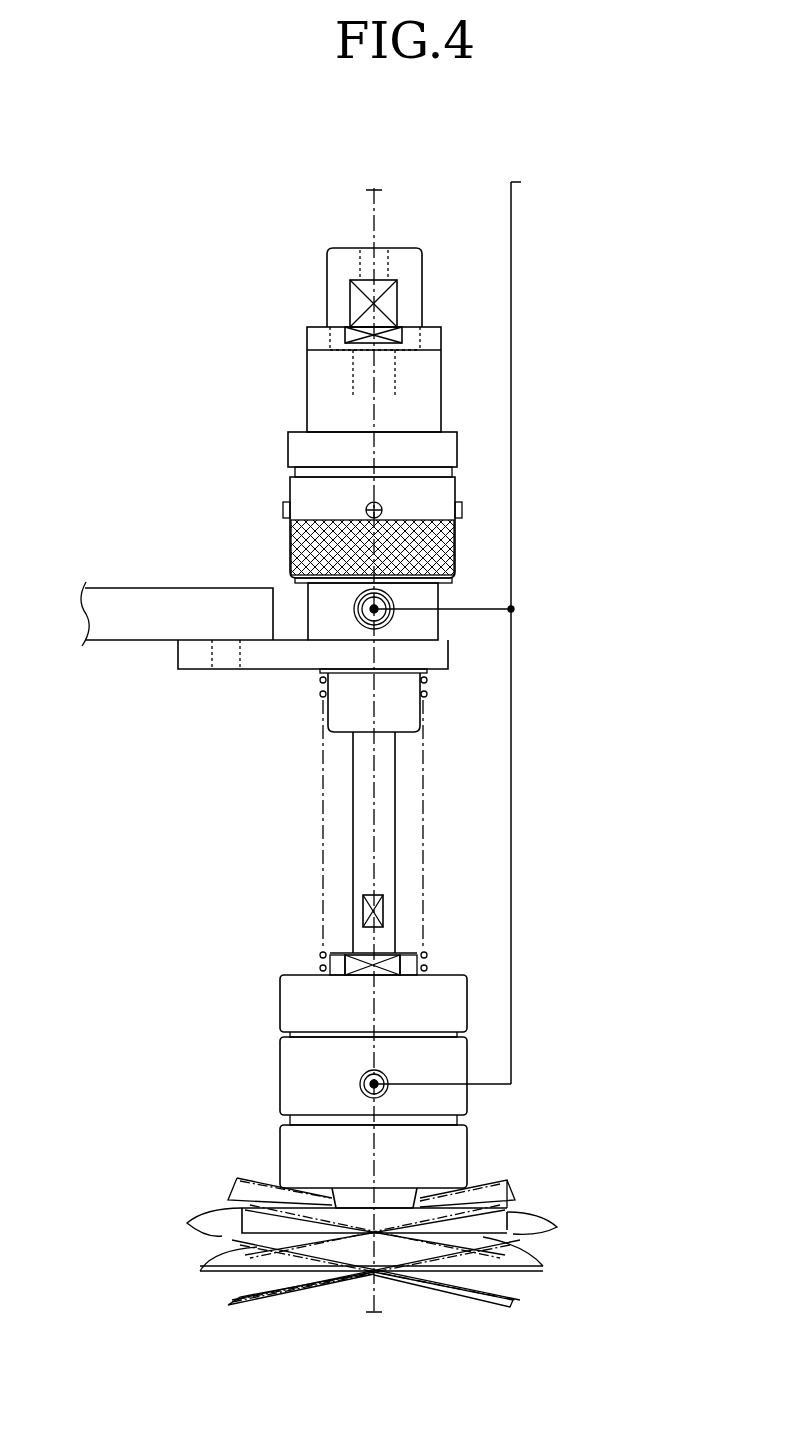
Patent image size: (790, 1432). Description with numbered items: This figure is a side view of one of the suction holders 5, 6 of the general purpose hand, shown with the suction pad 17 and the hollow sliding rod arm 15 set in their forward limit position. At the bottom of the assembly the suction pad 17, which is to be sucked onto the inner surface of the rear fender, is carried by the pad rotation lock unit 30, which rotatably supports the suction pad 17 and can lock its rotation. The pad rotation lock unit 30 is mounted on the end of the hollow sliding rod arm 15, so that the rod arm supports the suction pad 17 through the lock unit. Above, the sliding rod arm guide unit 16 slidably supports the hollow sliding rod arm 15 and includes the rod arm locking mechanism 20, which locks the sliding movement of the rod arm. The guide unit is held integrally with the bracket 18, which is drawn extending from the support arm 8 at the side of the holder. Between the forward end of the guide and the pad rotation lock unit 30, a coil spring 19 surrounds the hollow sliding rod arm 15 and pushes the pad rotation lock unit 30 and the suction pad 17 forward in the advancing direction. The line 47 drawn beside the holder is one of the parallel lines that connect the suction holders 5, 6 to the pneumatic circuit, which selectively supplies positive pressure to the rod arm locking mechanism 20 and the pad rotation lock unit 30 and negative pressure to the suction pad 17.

The suction holder 5 is at (423, 777).
The suction holder 6 is at (423, 777).
The support arm 8 is at (138, 598).
The hollow sliding rod arm 15 is at (388, 385).
The sliding rod arm guide unit 16 is at (464, 527).
The suction pad 17 is at (527, 1184).
The bracket 18 is at (262, 663).
The coil spring 19 is at (424, 800).
The rod arm locking mechanism 20 is at (467, 546).
The pad rotation lock unit 30 is at (483, 1064).
The line 47 is at (511, 252).